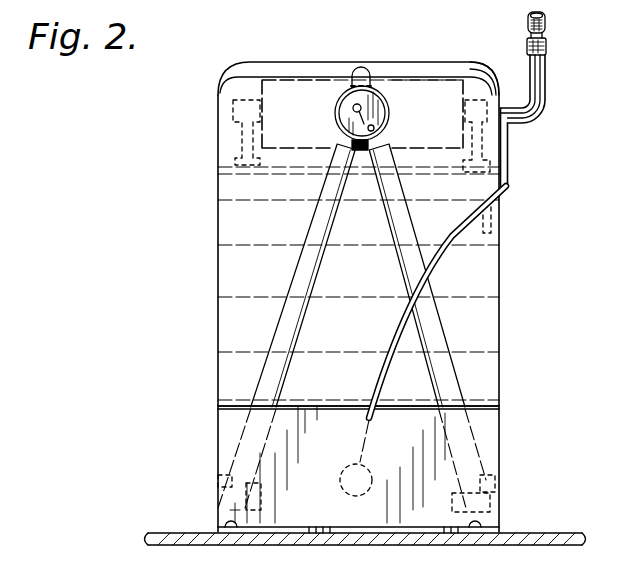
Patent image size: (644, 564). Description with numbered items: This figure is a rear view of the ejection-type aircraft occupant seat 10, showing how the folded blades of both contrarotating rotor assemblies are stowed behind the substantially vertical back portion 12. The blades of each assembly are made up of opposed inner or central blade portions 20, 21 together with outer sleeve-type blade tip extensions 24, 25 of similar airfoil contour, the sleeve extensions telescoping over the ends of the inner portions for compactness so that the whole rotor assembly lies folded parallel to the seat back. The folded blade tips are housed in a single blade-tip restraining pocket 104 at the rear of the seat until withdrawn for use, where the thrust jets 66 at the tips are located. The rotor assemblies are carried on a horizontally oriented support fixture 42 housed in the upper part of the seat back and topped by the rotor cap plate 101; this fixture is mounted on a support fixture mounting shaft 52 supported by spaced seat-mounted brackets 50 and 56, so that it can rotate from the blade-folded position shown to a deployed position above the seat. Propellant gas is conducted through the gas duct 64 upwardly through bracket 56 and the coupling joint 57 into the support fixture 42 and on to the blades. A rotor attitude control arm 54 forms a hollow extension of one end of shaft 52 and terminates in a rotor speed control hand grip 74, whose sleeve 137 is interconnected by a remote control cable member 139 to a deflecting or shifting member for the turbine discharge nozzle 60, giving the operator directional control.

The ejection-type aircraft occupant seat 10 is at (516, 330).
The back portion 12 is at (368, 338).
The inner blade portion 20 is at (297, 114).
The inner blade portion 21 is at (427, 115).
The blade tip extension 24 is at (300, 261).
The blade tip extension 25 is at (402, 261).
The support fixture 42 is at (319, 80).
The bracket 50 is at (331, 166).
The support fixture mounting shaft 52 is at (211, 129).
The rotor attitude control arm 54 is at (556, 85).
The bracket 56 is at (508, 143).
The coupling joint 57 is at (478, 66).
The discharge nozzle 60 is at (341, 490).
The gas duct 64 is at (505, 220).
The thrust jets 66 is at (213, 490).
The rotor speed control hand grip 74 is at (546, 21).
The rotor cap plate 101 is at (385, 118).
The tip restraining pocket 104 is at (494, 431).
The sleeve 137 is at (548, 47).
The remote control cable member 139 is at (437, 268).